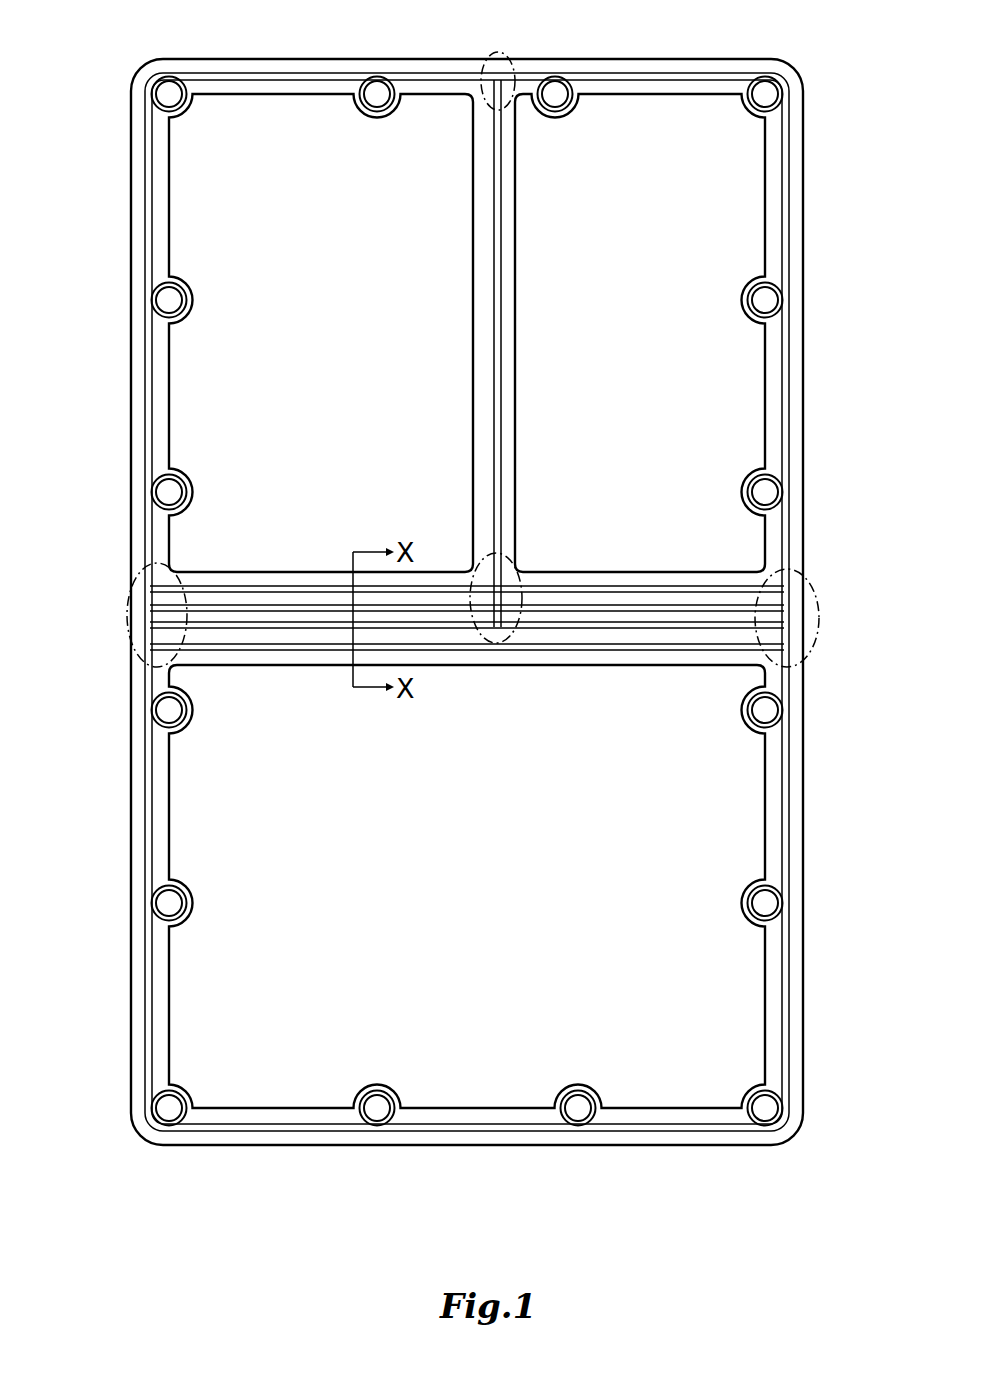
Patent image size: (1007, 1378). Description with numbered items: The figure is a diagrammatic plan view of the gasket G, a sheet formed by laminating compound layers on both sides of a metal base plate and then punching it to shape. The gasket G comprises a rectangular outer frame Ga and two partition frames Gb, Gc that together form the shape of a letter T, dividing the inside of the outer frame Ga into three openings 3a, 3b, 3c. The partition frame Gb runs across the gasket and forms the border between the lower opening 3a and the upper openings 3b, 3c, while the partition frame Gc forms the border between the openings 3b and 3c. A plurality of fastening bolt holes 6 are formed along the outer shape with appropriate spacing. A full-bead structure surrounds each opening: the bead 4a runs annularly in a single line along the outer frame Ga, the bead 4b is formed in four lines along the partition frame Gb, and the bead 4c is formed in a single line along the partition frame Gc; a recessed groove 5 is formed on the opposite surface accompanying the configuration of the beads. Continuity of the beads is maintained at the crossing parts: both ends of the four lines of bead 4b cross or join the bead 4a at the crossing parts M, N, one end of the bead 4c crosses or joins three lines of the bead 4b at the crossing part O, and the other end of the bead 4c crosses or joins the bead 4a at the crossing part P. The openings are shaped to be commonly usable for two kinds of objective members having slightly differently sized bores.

The gasket G is at (467, 602).
The recessed groove 5 is at (474, 1132).
The fastening bolt holes 6 is at (377, 82).
The outer frame Ga is at (418, 602).
The partition frame Gb is at (467, 658).
The partition frame Gc is at (550, 353).
The bead 4a is at (153, 200).
The bead 4b is at (634, 648).
The bead 4c is at (505, 343).
The opening 3a is at (293, 1072).
The opening 3b is at (737, 403).
The opening 3c is at (215, 378).
The crossing part P is at (515, 63).
The crossing part O is at (520, 575).
The crossing part M is at (130, 565).
The crossing part N is at (812, 577).